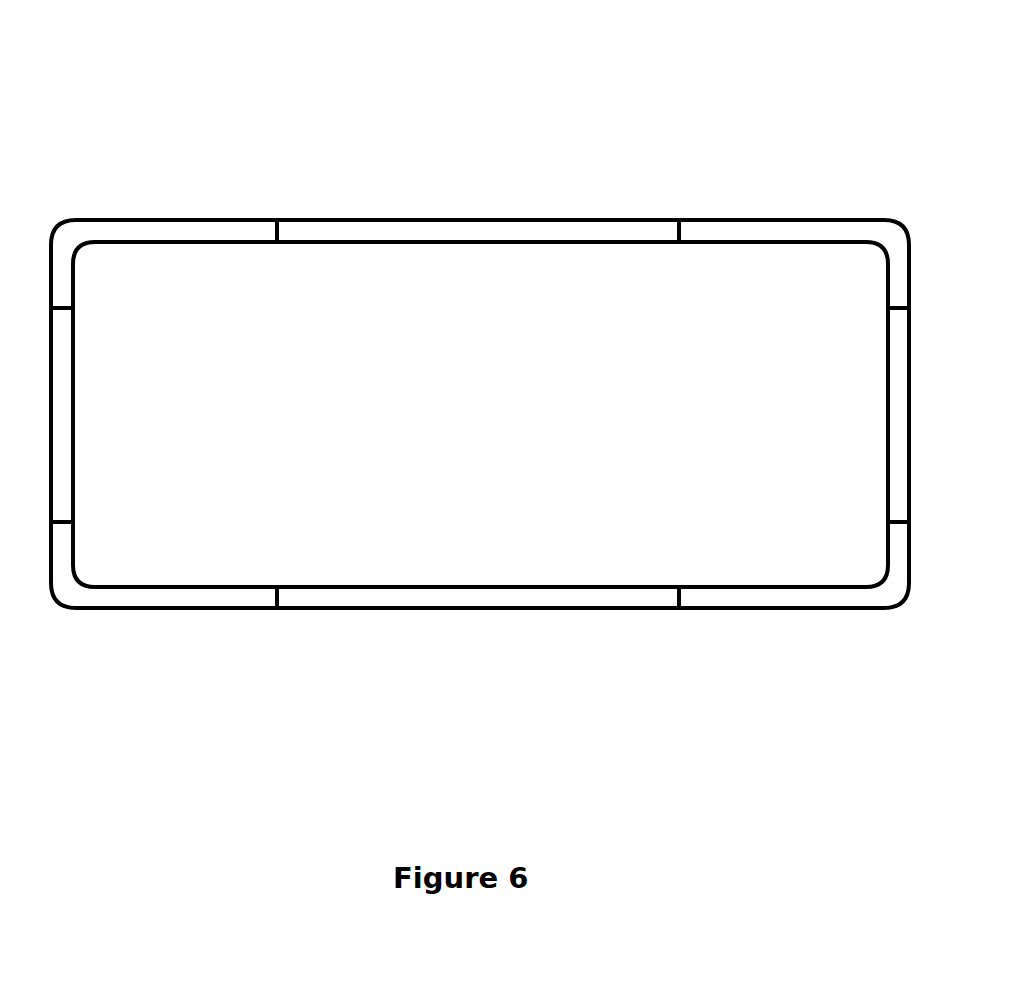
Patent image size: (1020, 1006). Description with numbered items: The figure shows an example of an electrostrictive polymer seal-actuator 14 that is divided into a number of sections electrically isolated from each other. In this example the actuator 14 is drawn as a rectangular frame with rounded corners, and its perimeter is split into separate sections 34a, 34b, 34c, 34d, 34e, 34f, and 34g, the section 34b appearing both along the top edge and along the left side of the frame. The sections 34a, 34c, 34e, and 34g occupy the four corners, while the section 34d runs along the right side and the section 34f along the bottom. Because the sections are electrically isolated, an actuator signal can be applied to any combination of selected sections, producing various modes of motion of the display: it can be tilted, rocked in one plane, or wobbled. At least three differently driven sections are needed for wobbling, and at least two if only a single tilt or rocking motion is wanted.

The electrostrictive polymer actuator 14 is at (527, 122).
The section 34a is at (140, 217).
The section 34b is at (480, 217).
The section 34c is at (830, 217).
The section 34d is at (887, 412).
The section 34e is at (843, 610).
The section 34f is at (480, 610).
The section 34g is at (135, 610).